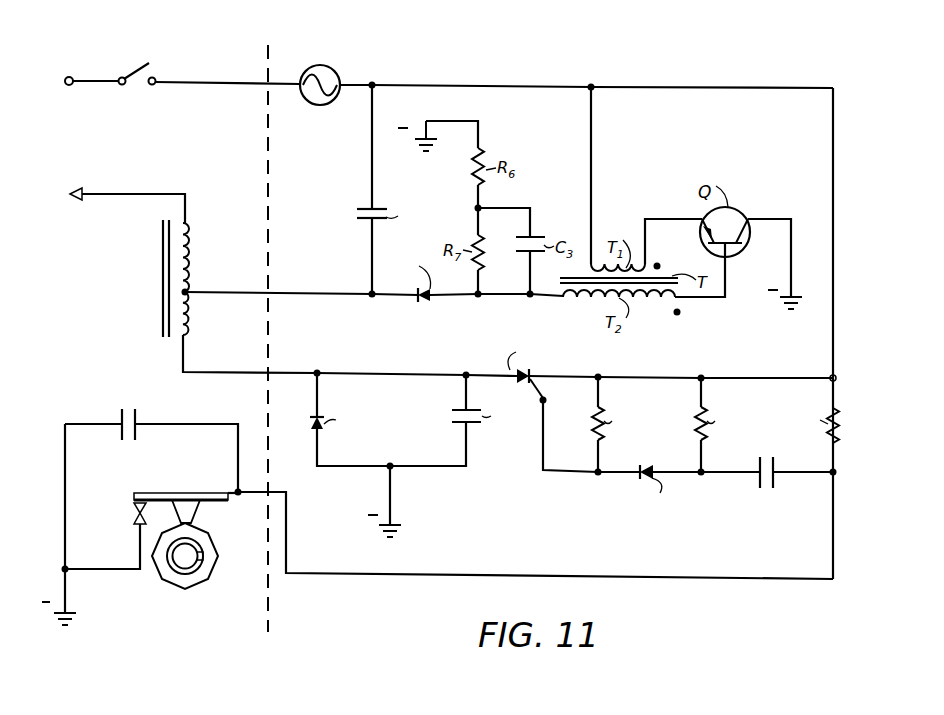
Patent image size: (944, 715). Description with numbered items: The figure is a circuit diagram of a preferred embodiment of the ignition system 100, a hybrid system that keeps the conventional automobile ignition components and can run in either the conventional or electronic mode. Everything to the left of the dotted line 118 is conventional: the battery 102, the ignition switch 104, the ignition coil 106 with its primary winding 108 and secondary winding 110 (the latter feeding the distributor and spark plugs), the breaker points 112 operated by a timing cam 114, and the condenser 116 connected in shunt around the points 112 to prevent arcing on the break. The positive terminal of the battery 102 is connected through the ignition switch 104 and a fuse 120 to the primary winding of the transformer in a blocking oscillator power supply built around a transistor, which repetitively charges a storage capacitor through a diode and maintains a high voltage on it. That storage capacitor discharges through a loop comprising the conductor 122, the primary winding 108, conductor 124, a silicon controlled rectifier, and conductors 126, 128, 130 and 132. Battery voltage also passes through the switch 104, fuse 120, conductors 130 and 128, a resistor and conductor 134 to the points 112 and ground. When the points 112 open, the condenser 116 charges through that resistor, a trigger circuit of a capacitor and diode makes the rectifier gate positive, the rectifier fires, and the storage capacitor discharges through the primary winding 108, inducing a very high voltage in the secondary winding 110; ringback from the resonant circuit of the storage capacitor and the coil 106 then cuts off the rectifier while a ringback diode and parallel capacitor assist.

The ignition system 100 is at (427, 44).
The battery 102 is at (65, 84).
The ignition switch 104 is at (123, 78).
The ignition coil 106 is at (170, 270).
The primary winding 108 is at (188, 320).
The secondary winding 110 is at (188, 229).
The breaker points 112 is at (134, 521).
The timing cam 114 is at (207, 580).
The condenser 116 is at (128, 412).
The dotted line 118 is at (268, 149).
The fuse 120 is at (339, 74).
The conductor 122 is at (343, 292).
The conductor 124 is at (370, 374).
The conductor 126 is at (656, 377).
The conductor 128 is at (833, 144).
The conductor 130 is at (516, 86).
The conductor 132 is at (370, 128).
The conductor 134 is at (571, 575).